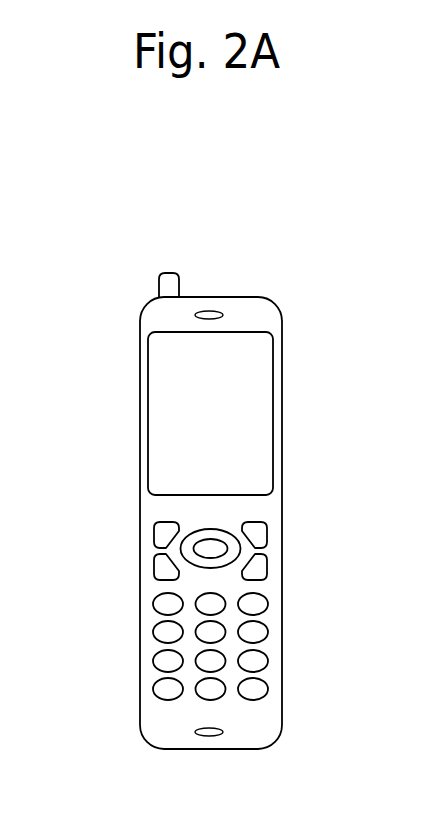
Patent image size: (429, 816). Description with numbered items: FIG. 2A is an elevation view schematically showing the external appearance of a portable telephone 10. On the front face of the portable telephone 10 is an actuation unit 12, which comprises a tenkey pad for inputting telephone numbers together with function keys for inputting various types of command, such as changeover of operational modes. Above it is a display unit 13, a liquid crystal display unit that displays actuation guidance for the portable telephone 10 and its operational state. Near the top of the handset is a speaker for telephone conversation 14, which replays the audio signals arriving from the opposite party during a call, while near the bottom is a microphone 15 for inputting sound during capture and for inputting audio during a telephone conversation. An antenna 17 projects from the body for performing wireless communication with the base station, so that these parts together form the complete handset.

The portable telephone 10 is at (216, 183).
The actuation unit 12 is at (268, 592).
The display unit 13 is at (147, 371).
The speaker for telephone conversation 14 is at (213, 311).
The microphone 15 is at (196, 731).
The antenna 17 is at (162, 272).